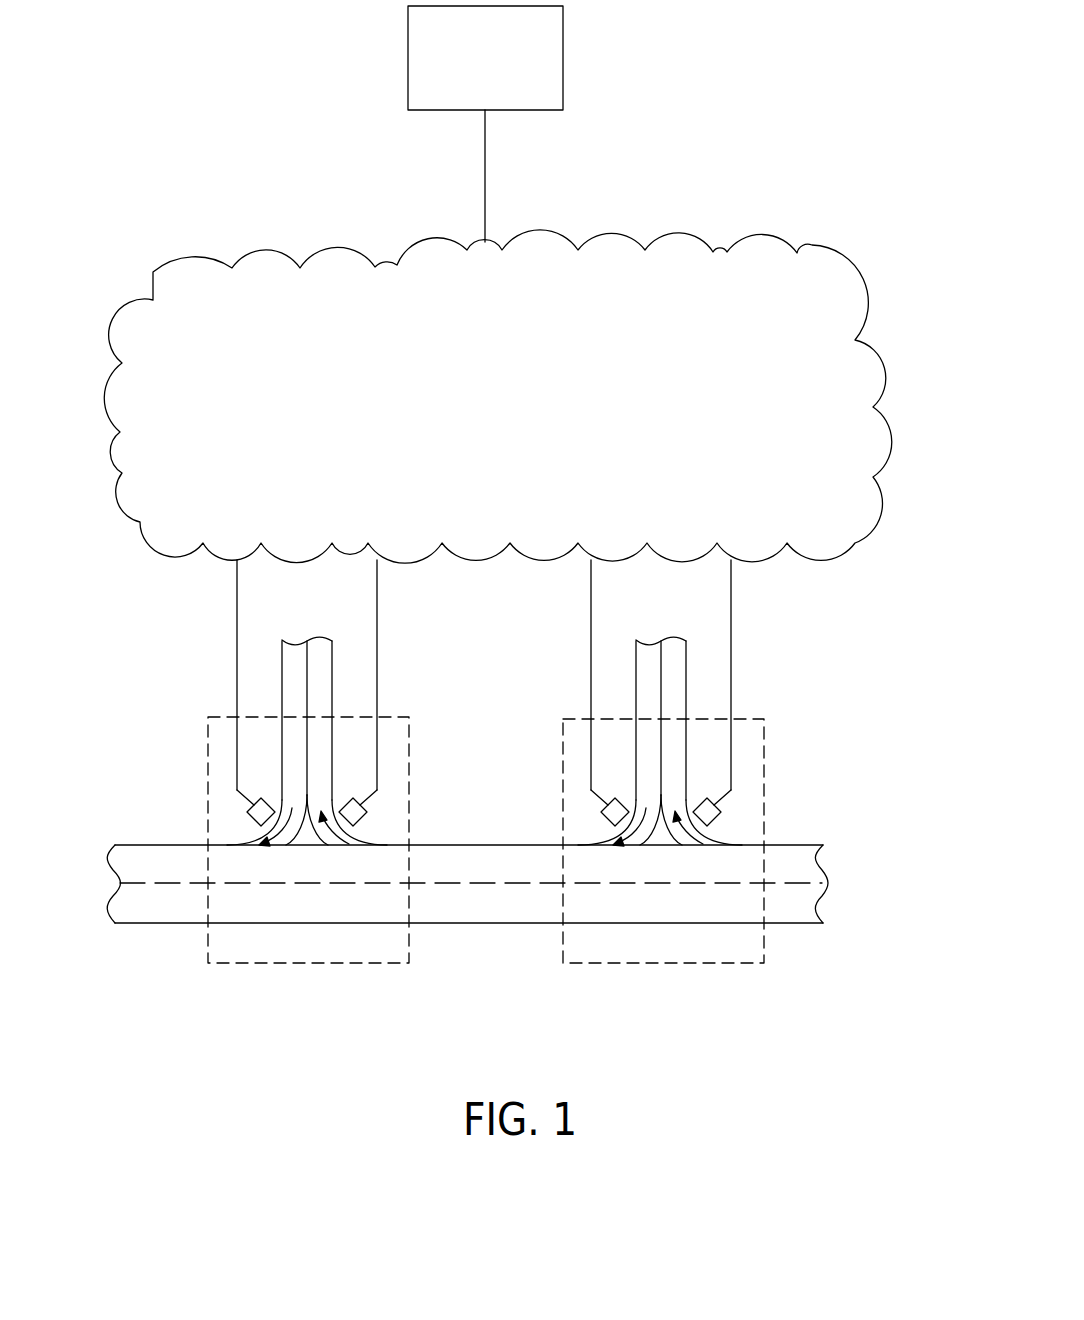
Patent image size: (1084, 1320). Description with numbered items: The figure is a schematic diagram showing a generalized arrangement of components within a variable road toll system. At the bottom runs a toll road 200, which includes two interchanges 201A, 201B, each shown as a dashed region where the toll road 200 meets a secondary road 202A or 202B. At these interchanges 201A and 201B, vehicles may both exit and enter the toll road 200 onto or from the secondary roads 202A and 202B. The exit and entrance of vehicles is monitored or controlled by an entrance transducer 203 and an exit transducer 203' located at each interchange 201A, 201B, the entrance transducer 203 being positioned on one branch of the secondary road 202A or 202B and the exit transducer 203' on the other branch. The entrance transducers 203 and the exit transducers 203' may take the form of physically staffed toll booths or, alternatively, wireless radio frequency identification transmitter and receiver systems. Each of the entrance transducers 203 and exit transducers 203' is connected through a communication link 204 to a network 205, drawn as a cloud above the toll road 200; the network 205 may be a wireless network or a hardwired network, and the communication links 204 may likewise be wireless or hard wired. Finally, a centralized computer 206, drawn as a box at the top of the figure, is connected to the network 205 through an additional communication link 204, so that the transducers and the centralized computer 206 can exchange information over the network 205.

The toll road 200 is at (180, 912).
The interchange 201A is at (302, 988).
The interchange 201B is at (665, 988).
The secondary road 202A is at (345, 686).
The secondary road 202B is at (699, 687).
The entrance transducer 203 is at (435, 788).
The exit transducer 203' is at (531, 788).
The communication link 204 is at (487, 178).
The network 205 is at (403, 411).
The centralized computer 206 is at (471, 74).